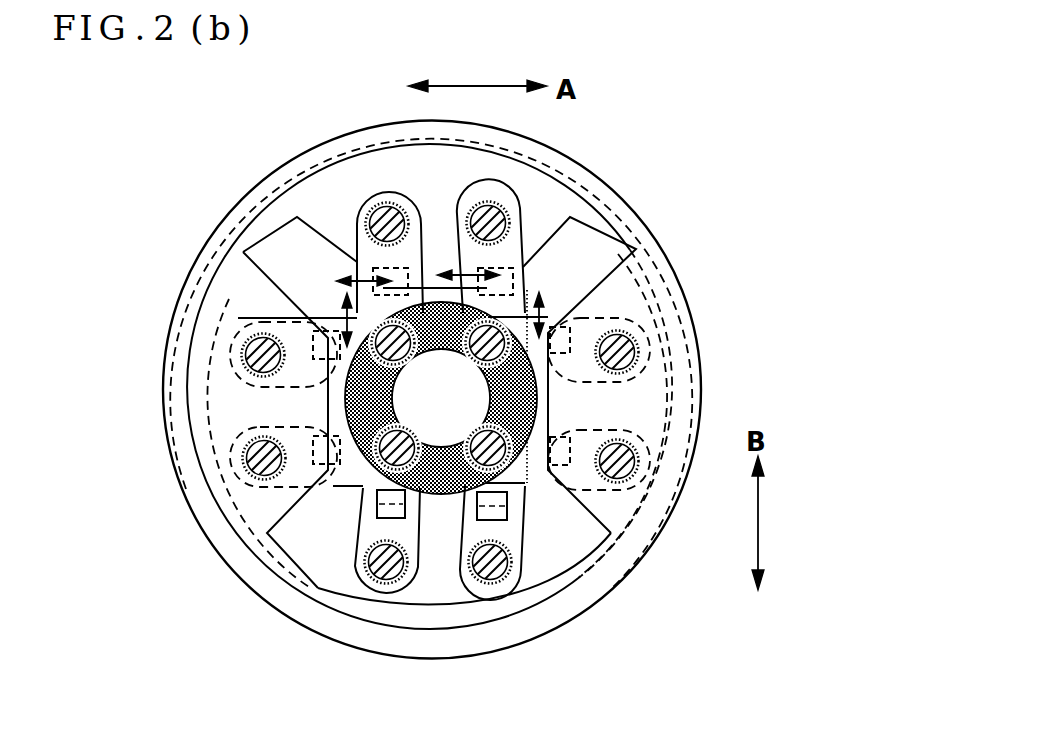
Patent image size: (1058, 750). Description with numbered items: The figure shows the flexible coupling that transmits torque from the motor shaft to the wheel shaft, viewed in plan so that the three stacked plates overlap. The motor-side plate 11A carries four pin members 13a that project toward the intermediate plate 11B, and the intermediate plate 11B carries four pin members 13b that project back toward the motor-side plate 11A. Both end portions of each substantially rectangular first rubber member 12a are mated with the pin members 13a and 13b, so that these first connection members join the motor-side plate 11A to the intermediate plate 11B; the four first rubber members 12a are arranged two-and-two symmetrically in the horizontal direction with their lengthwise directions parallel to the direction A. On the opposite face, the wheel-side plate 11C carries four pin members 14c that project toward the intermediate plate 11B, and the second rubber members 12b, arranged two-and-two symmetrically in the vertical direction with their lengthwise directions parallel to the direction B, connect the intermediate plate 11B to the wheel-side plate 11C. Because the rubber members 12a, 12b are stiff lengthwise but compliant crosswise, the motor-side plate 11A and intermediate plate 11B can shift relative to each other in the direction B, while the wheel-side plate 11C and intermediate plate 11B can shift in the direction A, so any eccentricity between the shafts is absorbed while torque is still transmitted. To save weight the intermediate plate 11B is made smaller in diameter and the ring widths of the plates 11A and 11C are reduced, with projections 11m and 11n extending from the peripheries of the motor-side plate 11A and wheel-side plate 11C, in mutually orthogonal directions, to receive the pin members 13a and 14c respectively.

The motor-side plate 11A is at (634, 296).
The intermediate plate 11B is at (543, 391).
The wheel-side plate 11C is at (555, 205).
The projection 11n is at (347, 203).
The projection 11m is at (285, 470).
The first rubber member 12a is at (682, 572).
The second rubber member 12b is at (202, 217).
The pin member 13a is at (240, 343).
The pin member 13b is at (360, 364).
The pin member 14c is at (380, 212).